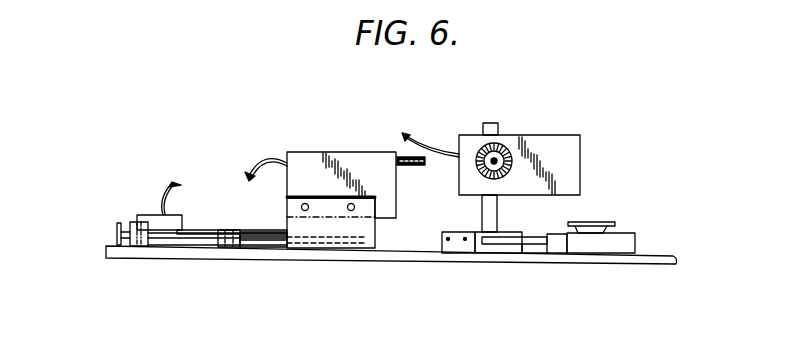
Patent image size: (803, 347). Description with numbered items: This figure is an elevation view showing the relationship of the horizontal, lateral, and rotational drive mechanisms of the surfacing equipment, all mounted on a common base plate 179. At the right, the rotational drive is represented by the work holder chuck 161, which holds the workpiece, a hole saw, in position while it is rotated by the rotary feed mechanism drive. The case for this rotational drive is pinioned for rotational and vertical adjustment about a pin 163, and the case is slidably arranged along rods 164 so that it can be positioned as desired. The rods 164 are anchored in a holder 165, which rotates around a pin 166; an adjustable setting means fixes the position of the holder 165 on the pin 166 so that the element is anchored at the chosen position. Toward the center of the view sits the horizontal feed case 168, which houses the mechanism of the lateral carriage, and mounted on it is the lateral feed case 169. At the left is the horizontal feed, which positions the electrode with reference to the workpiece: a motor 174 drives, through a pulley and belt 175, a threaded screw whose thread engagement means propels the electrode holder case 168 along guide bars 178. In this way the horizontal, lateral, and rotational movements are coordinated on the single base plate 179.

The work holder chuck 161 is at (508, 147).
The pin 163 is at (490, 123).
The rods 164 is at (530, 244).
The holder 165 is at (635, 233).
The pin 166 is at (592, 222).
The horizontal feed case 168 is at (305, 152).
The lateral feed case 169 is at (377, 237).
The motor 174 is at (180, 212).
The pulley and belt 175 is at (117, 236).
The guide bars 178 is at (275, 247).
The base plate 179 is at (673, 256).